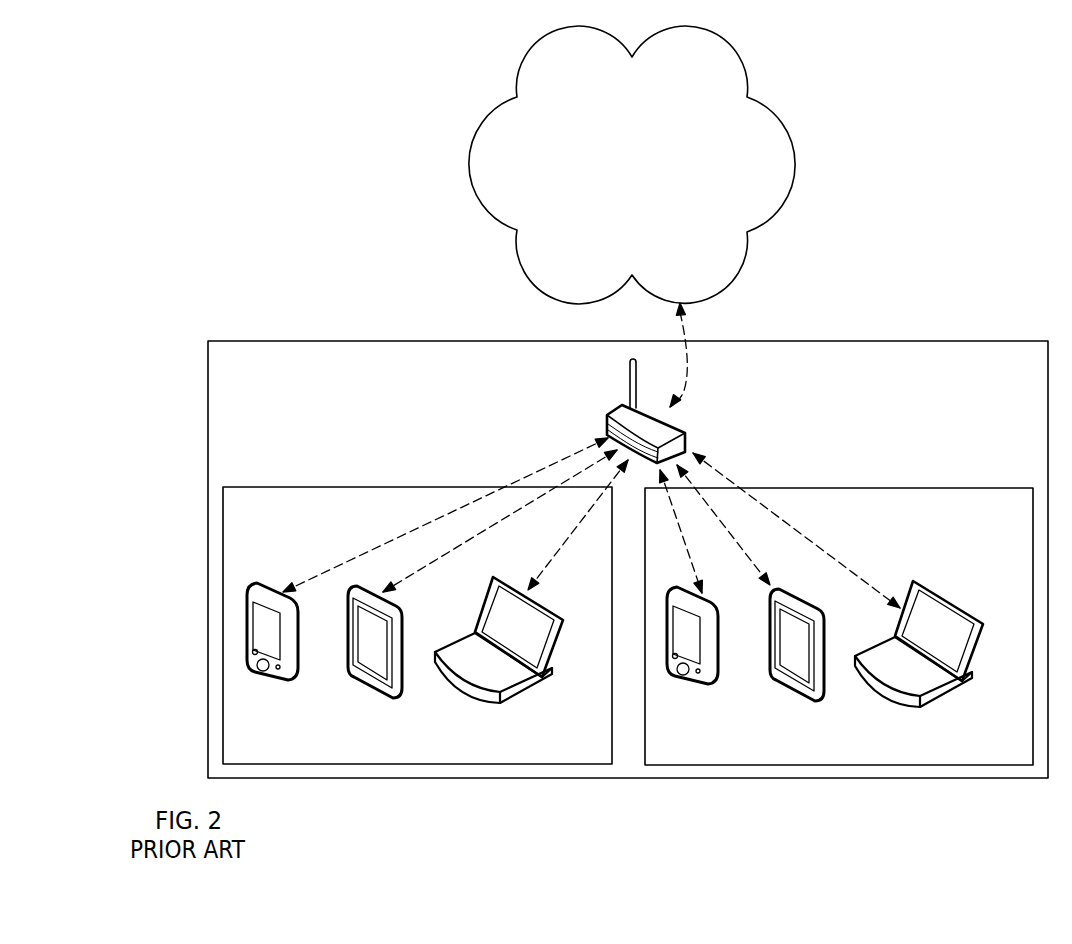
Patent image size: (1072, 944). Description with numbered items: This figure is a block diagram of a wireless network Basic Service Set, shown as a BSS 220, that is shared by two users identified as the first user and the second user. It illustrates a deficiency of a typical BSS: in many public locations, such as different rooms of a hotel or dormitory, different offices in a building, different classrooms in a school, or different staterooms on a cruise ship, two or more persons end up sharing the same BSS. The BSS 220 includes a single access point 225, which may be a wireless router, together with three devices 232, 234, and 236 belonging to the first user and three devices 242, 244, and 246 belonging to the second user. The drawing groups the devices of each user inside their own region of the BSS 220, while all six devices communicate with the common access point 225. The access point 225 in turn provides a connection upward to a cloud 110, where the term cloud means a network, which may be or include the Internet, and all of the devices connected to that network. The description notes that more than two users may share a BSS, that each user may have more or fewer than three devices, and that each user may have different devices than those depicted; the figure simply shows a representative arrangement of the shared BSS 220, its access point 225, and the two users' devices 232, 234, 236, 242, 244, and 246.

The cloud 110 is at (632, 165).
The BSS 220 is at (628, 559).
The access point 225 is at (690, 437).
The device 232 is at (279, 681).
The device 234 is at (375, 693).
The device 236 is at (512, 703).
The device 242 is at (699, 685).
The device 244 is at (796, 697).
The device 246 is at (932, 707).